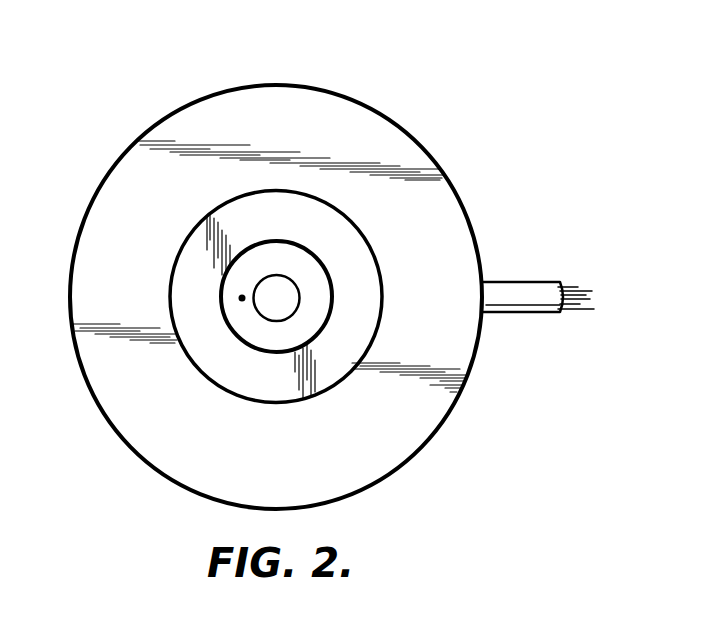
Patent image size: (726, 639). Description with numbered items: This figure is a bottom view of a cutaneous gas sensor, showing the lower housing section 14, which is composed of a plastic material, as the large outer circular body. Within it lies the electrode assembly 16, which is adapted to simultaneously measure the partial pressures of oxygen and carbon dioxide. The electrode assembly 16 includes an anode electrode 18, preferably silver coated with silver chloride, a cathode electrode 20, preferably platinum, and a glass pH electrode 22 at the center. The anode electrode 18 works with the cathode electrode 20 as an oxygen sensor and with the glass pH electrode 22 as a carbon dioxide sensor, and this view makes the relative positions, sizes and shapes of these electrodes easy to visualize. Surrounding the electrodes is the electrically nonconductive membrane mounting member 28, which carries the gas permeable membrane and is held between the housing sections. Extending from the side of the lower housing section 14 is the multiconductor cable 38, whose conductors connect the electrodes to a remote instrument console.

The lower housing section 14 is at (146, 193).
The electrode assembly 16 is at (227, 352).
The anode electrode 18 is at (280, 255).
The cathode electrode 20 is at (242, 298).
The glass pH electrode 22 is at (278, 297).
The membrane mounting member 28 is at (362, 299).
The multiconductor cable 38 is at (532, 282).